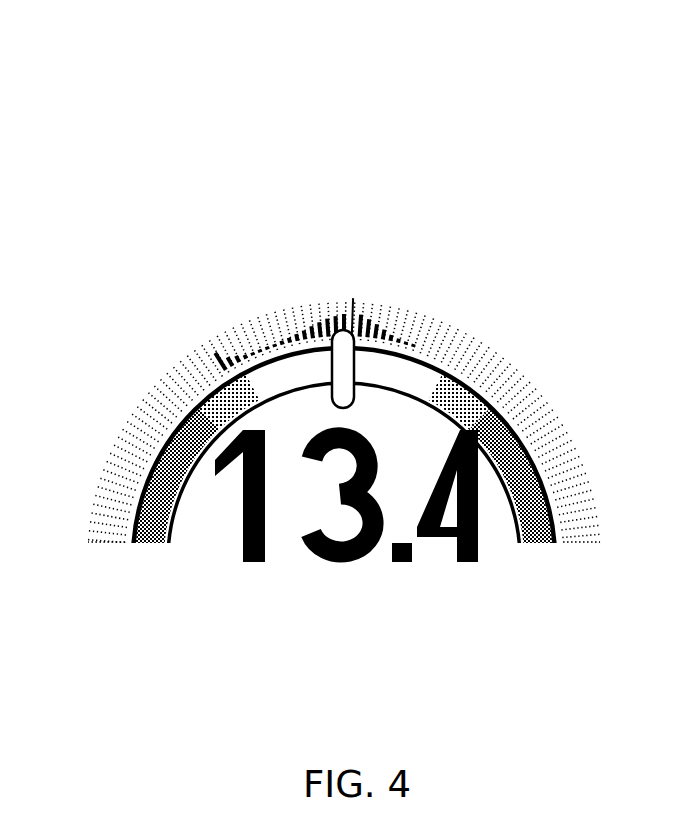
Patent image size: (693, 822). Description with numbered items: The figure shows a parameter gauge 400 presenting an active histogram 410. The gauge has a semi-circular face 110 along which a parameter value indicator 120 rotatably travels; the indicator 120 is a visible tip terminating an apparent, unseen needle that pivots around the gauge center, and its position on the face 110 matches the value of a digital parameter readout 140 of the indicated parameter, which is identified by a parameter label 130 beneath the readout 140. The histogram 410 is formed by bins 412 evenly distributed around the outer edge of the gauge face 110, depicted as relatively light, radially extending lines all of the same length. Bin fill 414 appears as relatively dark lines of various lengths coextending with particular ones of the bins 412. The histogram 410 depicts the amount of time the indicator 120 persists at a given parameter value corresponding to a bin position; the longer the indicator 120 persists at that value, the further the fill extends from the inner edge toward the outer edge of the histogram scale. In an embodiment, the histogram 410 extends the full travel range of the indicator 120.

The parameter gauge 400 is at (353, 63).
The semi-circular face 110 is at (160, 450).
The parameter value indicator 120 is at (348, 395).
The parameter label 130 is at (388, 602).
The digital parameter readout 140 is at (247, 558).
The active histogram 410 is at (470, 335).
The bins 412 is at (100, 567).
The bin fill 414 is at (219, 356).